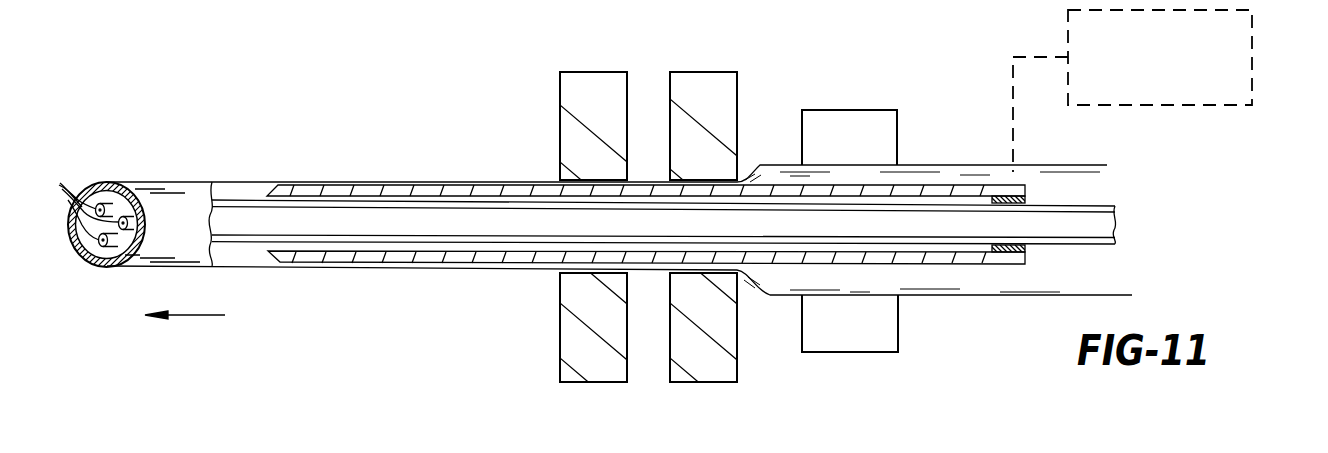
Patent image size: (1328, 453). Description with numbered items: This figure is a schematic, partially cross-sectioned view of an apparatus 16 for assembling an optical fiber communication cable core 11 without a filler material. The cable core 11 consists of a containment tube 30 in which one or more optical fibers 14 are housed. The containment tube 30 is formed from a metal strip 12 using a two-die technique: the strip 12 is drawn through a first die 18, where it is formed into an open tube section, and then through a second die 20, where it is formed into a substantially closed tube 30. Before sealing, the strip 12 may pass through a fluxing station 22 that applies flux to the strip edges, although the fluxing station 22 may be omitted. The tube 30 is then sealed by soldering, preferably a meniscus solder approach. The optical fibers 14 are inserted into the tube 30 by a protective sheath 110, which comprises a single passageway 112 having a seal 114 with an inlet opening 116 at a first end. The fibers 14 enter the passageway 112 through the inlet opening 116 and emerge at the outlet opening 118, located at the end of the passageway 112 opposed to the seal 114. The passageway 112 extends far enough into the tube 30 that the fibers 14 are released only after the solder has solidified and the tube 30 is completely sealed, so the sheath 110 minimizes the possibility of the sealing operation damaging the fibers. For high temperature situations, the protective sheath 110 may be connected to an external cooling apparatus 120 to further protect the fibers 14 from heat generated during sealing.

The cable core 11 is at (116, 152).
The metal strip 12 is at (957, 175).
The optical fibers 14 is at (1150, 213).
The apparatus for assembling the cable core 16 is at (403, 81).
The first die 18 is at (713, 72).
The second die 20 is at (560, 82).
The fluxing station 22 is at (855, 140).
The containment tube 30 is at (176, 190).
The protective sheath 110 is at (471, 182).
The passageway 112 is at (945, 265).
The seal 114 is at (1027, 196).
The inlet opening 116 is at (1028, 250).
The outlet opening 118 is at (268, 188).
The cooling apparatus 120 is at (1255, 43).